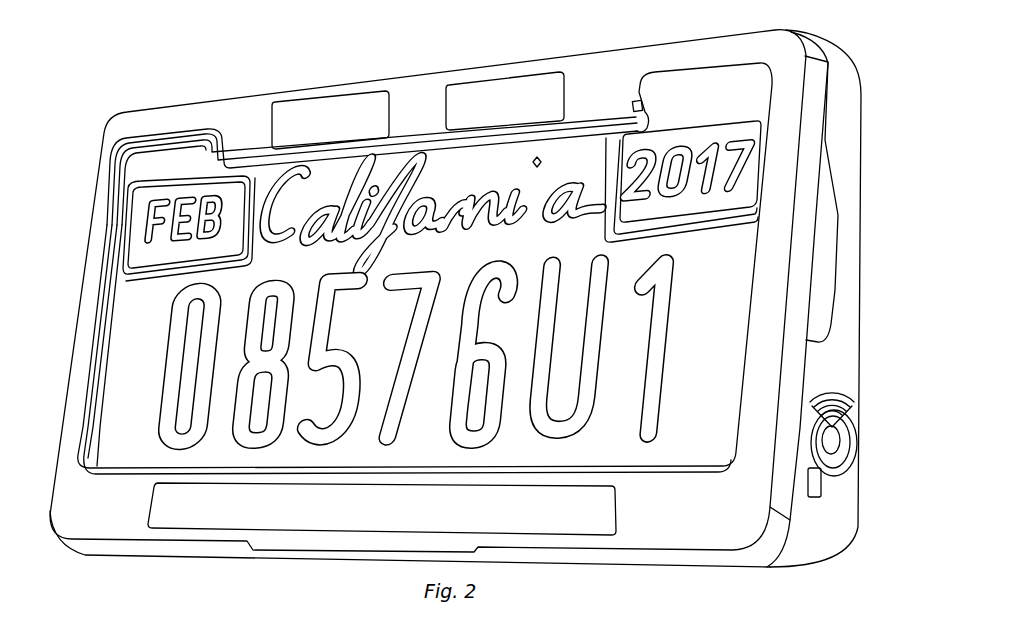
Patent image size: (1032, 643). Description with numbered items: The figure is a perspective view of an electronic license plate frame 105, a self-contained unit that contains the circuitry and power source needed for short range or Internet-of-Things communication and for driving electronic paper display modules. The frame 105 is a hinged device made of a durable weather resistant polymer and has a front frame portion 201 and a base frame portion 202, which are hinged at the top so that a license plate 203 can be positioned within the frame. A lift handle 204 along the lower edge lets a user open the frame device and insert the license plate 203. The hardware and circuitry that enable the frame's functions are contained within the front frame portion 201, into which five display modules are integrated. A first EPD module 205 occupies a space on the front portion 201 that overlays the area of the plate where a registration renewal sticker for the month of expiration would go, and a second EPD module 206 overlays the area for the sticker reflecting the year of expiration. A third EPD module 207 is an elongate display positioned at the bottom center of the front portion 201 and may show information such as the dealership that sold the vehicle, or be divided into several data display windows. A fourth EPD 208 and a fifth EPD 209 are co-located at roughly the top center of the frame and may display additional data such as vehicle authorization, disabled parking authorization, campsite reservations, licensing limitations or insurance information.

The electronic license plate frame 105 is at (311, 70).
The front frame portion 201 is at (484, 66).
The base frame portion 202 is at (863, 240).
The license plate 203 is at (137, 385).
The lift handle 204 is at (360, 556).
The first EPD module 205 is at (206, 178).
The second EPD module 206 is at (688, 127).
The third EPD module 207 is at (617, 525).
The fourth EPD 208 is at (268, 146).
The fifth EPD 209 is at (444, 125).